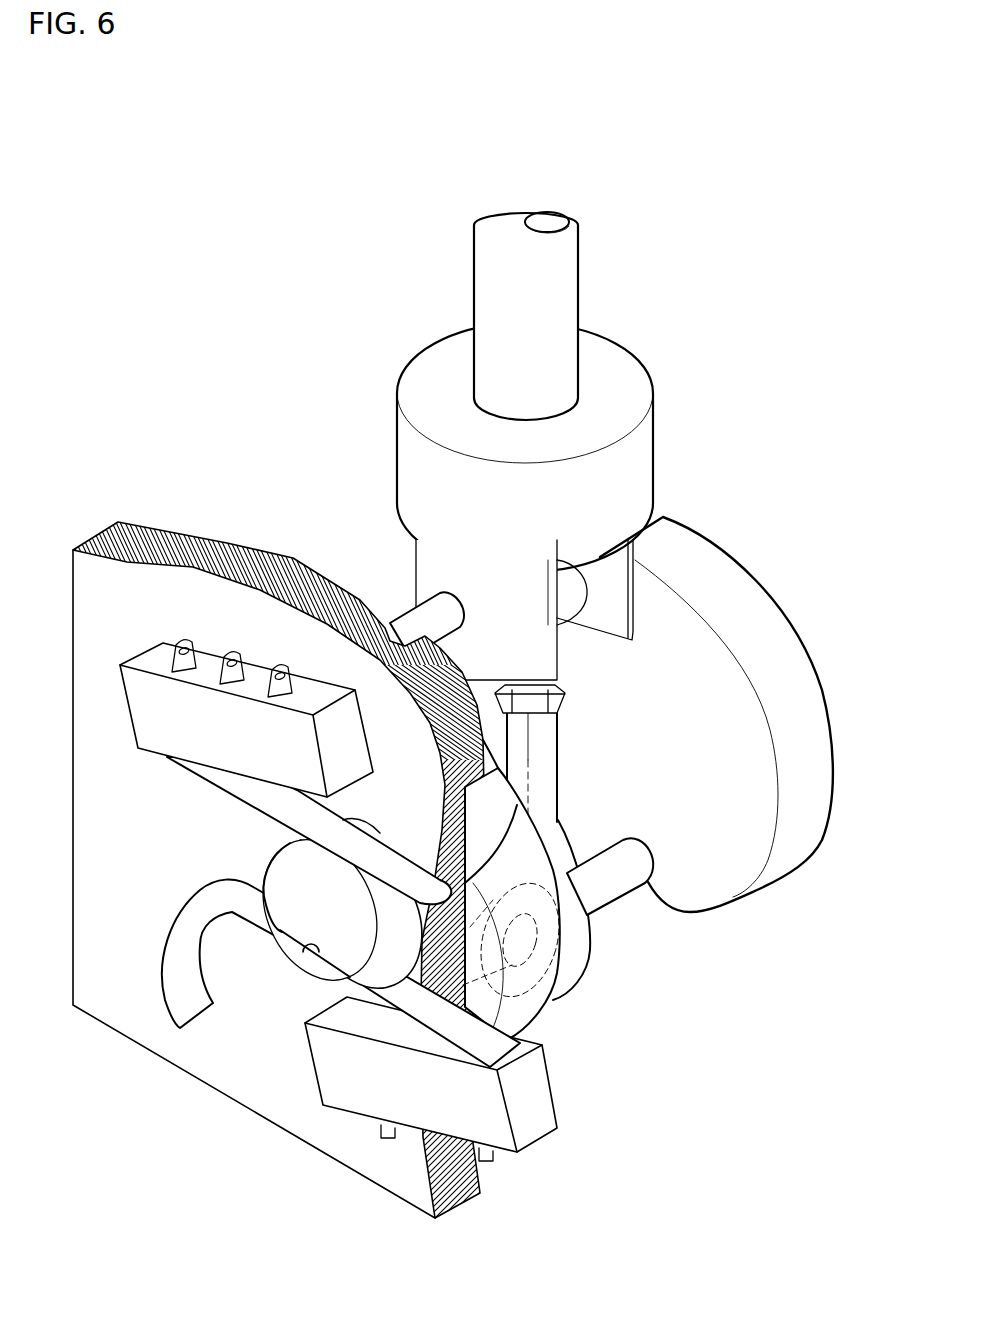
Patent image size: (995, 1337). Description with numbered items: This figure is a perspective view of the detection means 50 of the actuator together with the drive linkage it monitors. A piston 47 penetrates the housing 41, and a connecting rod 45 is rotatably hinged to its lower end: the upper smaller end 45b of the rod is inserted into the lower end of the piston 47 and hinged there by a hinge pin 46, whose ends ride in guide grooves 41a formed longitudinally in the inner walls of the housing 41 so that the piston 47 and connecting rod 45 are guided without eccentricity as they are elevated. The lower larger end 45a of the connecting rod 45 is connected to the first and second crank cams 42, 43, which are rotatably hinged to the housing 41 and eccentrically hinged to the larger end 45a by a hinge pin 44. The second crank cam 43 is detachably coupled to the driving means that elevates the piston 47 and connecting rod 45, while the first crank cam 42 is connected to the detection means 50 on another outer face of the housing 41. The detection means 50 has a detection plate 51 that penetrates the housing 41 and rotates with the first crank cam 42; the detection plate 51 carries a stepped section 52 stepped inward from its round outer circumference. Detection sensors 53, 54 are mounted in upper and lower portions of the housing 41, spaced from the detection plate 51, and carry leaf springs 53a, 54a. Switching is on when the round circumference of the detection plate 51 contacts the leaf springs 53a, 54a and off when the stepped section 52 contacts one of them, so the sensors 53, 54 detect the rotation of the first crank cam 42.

The housing 41 is at (207, 545).
The guide groove 41a is at (368, 616).
The first crank cam 42 is at (530, 1013).
The second crank cam 43 is at (752, 597).
The hinge pin 44 is at (613, 885).
The connecting rod 45 is at (558, 780).
The larger end 45a is at (585, 948).
The smaller end 45b is at (567, 605).
The hinge pin 46 is at (663, 517).
The piston 47 is at (568, 277).
The detection means 50 is at (250, 1016).
The detection plate 51 is at (283, 876).
The stepped section 52 is at (303, 952).
The detection sensor 53 is at (133, 710).
The leaf spring 53a is at (228, 783).
The detection sensor 54 is at (340, 1102).
The leaf spring 54a is at (212, 893).